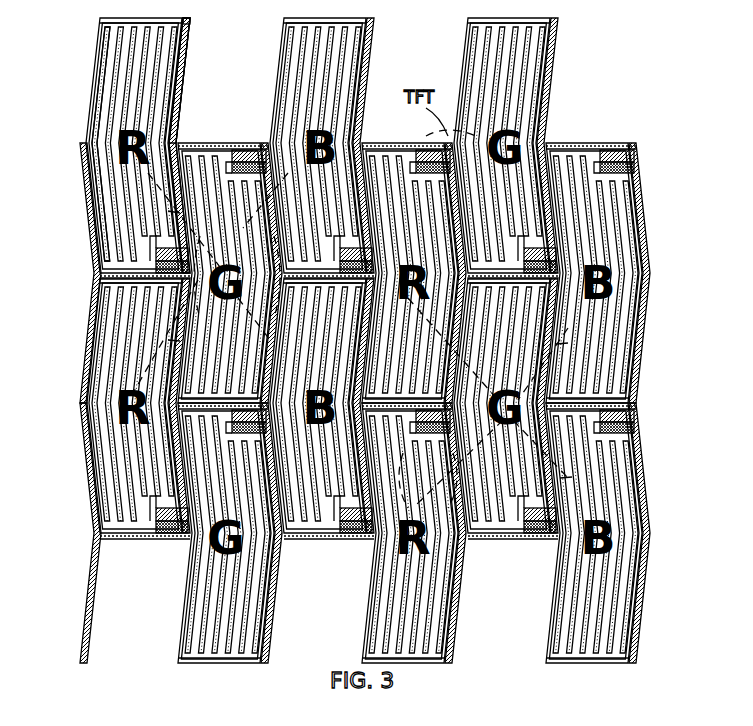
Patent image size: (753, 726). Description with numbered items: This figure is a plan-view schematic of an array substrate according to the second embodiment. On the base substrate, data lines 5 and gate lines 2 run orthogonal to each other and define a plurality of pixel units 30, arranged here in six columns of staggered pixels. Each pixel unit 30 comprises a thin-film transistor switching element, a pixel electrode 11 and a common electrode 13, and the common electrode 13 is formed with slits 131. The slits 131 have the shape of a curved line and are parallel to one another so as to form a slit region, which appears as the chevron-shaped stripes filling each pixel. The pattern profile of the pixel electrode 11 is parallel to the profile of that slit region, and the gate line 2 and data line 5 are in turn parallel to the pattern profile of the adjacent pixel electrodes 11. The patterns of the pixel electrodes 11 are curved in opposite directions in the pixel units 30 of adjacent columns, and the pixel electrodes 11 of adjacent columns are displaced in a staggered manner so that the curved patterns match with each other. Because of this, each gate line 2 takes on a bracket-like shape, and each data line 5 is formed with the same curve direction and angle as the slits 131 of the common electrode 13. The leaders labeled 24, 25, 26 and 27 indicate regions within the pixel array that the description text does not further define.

The pixel unit 30 is at (92, 14).
The pixel electrode 11 is at (180, 11).
The common electrode 13 is at (100, 50).
The slit 131 is at (176, 48).
The data line 5 is at (168, 105).
The first alignment region 24 is at (172, 205).
The gate line 2 is at (78, 263).
The second alignment region 25 is at (172, 333).
The third alignment region 26 is at (548, 336).
The fourth alignment region 27 is at (552, 470).